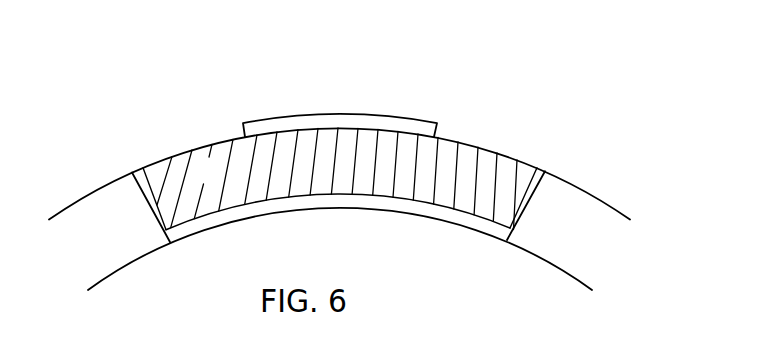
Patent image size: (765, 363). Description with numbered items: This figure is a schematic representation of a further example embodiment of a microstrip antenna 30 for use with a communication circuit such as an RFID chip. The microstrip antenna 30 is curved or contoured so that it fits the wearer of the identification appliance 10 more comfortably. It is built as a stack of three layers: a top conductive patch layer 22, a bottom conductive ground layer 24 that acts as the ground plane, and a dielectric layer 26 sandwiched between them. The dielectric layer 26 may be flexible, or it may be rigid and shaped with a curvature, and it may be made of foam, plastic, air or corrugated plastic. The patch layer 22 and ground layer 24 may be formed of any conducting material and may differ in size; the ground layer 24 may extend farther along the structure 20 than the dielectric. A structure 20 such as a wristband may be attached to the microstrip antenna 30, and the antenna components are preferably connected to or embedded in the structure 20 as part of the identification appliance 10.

The identification appliance 10 is at (588, 147).
The structure 20 is at (121, 236).
The conductive patch layer 22 is at (352, 122).
The conductive ground layer 24 is at (372, 202).
The dielectric layer 26 is at (224, 180).
The microstrip antenna 30 is at (480, 107).